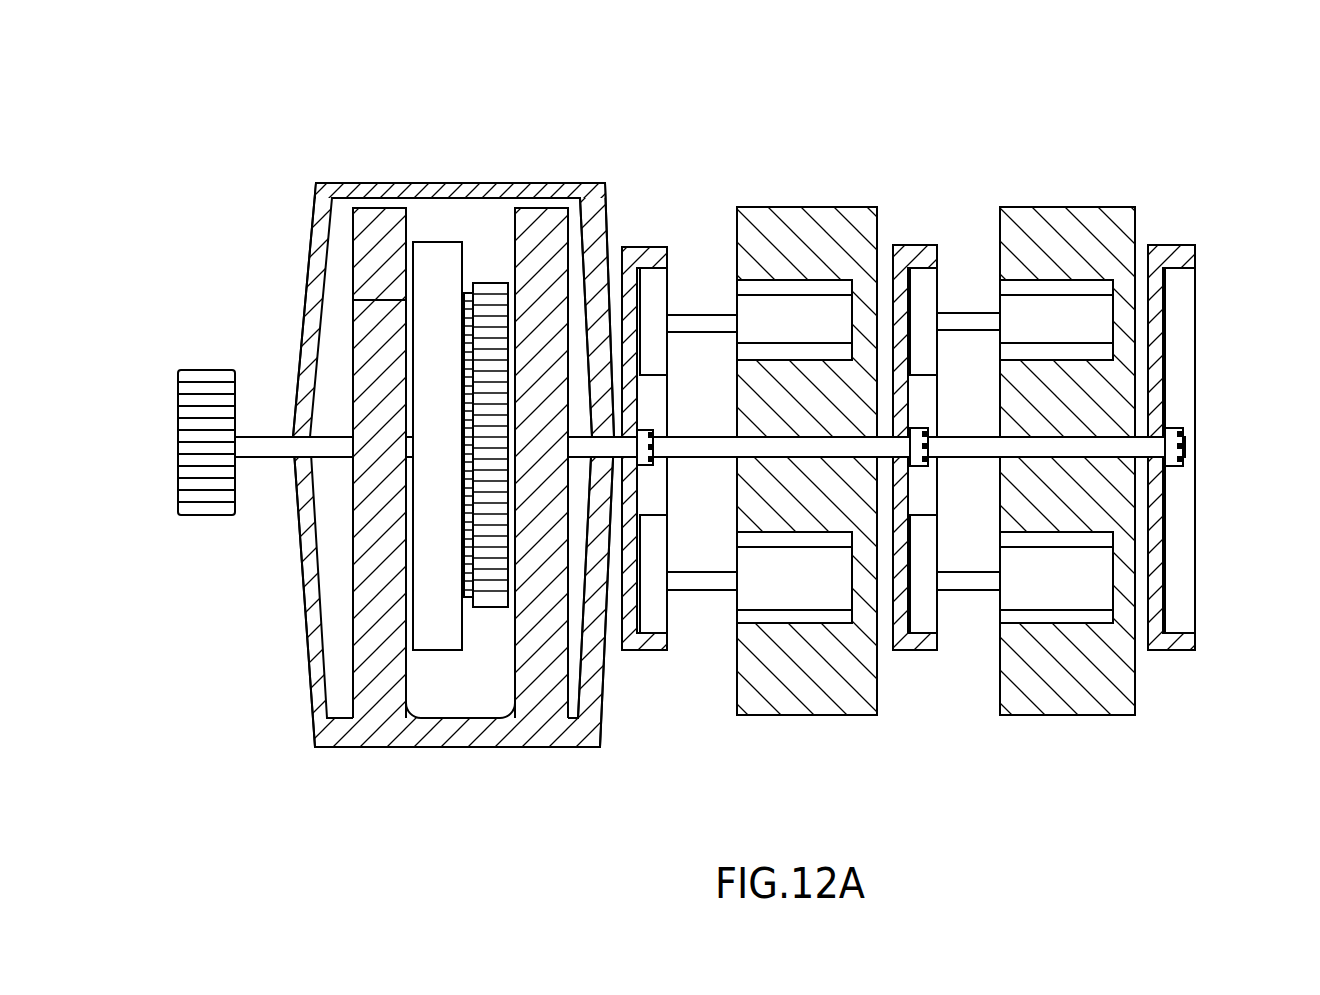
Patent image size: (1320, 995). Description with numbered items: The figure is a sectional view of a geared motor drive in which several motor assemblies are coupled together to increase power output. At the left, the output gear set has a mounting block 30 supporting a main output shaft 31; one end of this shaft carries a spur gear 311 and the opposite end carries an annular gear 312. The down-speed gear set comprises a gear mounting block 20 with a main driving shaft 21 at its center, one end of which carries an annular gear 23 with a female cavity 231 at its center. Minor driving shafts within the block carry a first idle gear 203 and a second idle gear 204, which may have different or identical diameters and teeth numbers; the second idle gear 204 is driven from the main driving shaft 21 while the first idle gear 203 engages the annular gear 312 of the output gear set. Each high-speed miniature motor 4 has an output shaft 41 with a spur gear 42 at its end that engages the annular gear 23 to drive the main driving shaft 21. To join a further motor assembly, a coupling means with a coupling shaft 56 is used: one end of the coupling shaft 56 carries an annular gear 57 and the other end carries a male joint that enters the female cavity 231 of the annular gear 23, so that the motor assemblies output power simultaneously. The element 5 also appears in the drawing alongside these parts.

The gear mounting block 20 is at (543, 210).
The main driving shaft 21 is at (583, 447).
The annular gear 23 is at (630, 246).
The mounting block 30 is at (368, 226).
The main output shaft 31 is at (272, 442).
The spur gear 311 is at (207, 370).
The annular gear 312 is at (405, 212).
The first idle gear 203 is at (433, 247).
The second idle gear 204 is at (498, 282).
The high-speed miniature motor 4 is at (797, 305).
The stator 5 is at (867, 213).
The output shaft 41 is at (708, 322).
The spur gear 42 is at (660, 300).
The coupling shaft 56 is at (708, 458).
The annular gear 57 is at (913, 243).
The female cavity 231 is at (1187, 442).